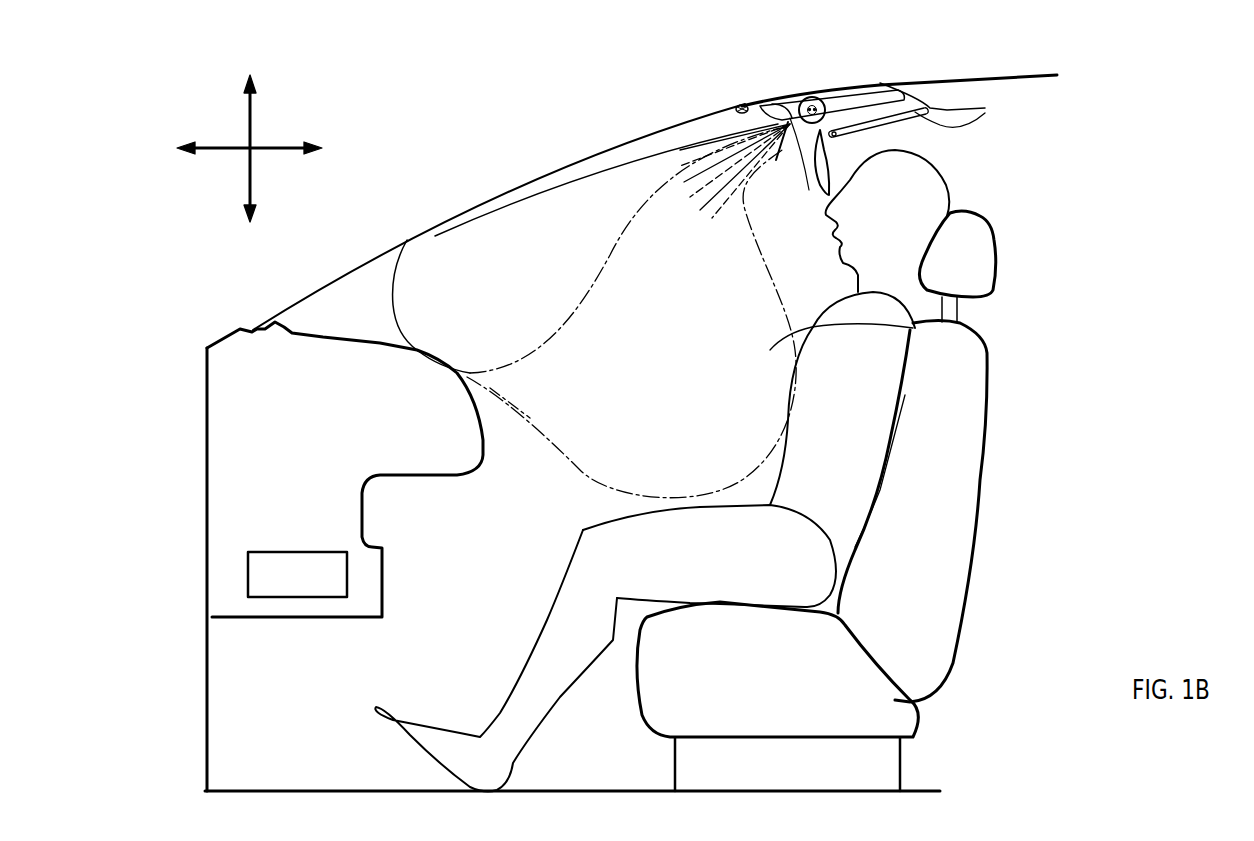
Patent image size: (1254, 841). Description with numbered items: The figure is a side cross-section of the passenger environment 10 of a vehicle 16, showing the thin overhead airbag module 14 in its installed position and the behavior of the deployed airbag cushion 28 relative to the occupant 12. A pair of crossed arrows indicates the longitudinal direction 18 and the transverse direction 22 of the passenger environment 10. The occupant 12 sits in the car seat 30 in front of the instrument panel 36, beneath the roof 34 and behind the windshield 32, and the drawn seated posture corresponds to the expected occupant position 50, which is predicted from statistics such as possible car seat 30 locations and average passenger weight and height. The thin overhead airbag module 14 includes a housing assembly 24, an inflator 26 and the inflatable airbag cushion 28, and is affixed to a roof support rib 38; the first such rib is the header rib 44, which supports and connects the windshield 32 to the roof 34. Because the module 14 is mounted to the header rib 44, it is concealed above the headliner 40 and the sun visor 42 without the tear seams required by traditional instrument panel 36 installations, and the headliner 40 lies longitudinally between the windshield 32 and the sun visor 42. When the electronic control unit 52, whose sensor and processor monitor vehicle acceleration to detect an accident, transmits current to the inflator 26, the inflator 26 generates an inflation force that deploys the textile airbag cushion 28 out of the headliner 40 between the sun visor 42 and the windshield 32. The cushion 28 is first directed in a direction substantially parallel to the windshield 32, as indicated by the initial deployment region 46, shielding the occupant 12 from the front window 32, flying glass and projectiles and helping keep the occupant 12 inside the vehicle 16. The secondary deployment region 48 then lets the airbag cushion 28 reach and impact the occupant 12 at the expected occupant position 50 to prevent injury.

The passenger environment 10 is at (520, 520).
The occupant 12 is at (960, 187).
The thin overhead airbag module 14 is at (862, 100).
The vehicle 16 is at (476, 193).
The longitudinal direction 18 is at (278, 150).
The transverse direction 22 is at (252, 110).
The housing assembly 24 is at (776, 102).
The inflator 26 is at (814, 97).
The airbag cushion 28 is at (623, 167).
The car seat 30 is at (985, 358).
The windshield 32 is at (565, 170).
The roof 34 is at (977, 76).
The instrument panel 36 is at (380, 350).
The roof support rib 38 is at (941, 93).
The headliner 40 is at (811, 188).
The sun visor 42 is at (985, 113).
The header rib 44 is at (758, 104).
The initial deployment region 46 is at (453, 283).
The secondary deployment region 48 is at (960, 325).
The expected occupant position 50 is at (797, 448).
The electronic control unit 52 is at (278, 588).